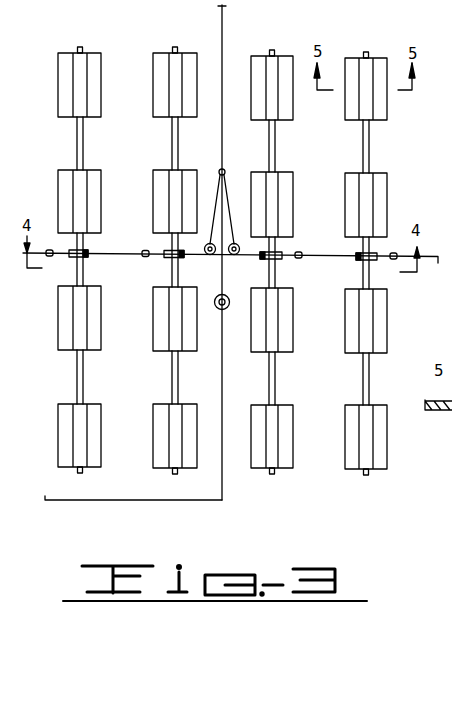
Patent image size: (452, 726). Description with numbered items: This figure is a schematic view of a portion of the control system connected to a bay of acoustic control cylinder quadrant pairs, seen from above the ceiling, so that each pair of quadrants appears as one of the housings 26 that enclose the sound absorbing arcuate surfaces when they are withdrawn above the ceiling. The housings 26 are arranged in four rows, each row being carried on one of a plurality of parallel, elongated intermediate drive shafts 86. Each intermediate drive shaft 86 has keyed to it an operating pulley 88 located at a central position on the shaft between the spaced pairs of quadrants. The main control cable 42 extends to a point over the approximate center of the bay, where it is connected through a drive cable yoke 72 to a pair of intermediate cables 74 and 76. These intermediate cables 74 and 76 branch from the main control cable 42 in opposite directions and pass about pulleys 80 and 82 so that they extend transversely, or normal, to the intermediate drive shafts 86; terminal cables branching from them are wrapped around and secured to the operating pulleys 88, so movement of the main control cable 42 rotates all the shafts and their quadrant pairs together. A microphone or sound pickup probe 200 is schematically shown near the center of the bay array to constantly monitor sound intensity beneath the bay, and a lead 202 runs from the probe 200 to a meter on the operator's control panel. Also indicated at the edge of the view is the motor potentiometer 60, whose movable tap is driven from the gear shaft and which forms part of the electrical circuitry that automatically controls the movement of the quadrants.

The main control cable 42 is at (222, 20).
The lead 202 is at (222, 500).
The housing 26 is at (65, 82).
The intermediate drive shaft 86 is at (373, 143).
The operating pulley 88 is at (88, 258).
The drive cable yoke 72 is at (225, 170).
The intermediate cable 74 is at (213, 198).
The intermediate cable 76 is at (229, 210).
The pulley 80 is at (210, 256).
The pulley 82 is at (232, 256).
The microphone or sound pickup probe 200 is at (230, 287).
The motor potentiometer 60 is at (438, 395).